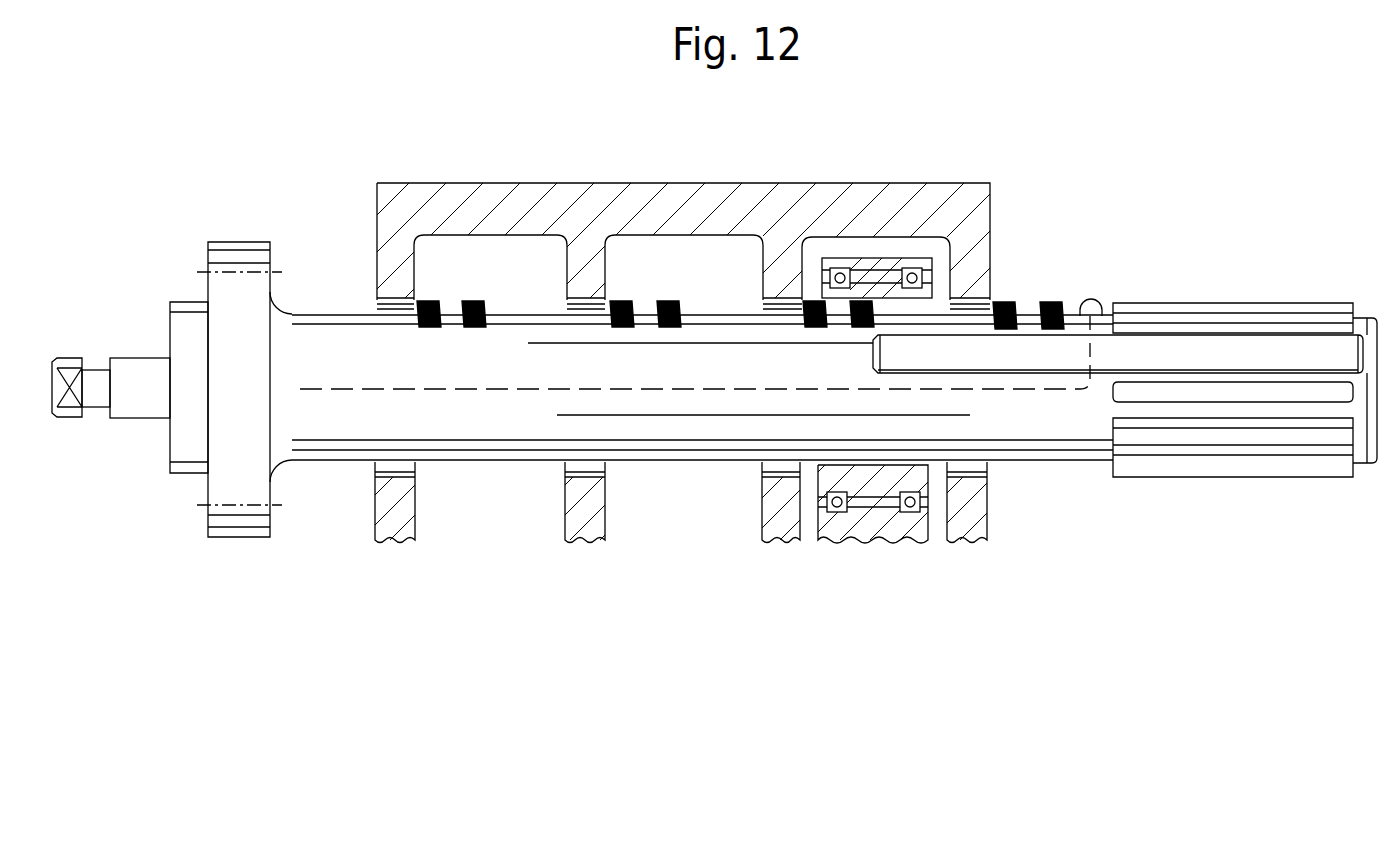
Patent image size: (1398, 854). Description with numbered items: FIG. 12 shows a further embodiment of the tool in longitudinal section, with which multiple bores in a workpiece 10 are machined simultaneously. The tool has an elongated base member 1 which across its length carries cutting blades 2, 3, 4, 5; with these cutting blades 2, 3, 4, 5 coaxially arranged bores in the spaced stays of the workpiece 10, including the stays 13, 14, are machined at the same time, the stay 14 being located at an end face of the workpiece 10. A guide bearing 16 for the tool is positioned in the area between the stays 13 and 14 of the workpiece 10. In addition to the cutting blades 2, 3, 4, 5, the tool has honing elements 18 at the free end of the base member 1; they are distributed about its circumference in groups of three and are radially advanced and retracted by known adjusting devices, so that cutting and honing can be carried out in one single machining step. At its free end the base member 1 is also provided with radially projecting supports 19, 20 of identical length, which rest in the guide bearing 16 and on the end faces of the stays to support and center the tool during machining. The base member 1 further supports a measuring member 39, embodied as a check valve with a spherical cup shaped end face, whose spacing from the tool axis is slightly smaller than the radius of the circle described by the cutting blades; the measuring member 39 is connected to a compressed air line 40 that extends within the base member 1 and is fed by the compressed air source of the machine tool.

The base member 1 is at (338, 422).
The cutting blade 2 is at (478, 300).
The cutting blade 3 is at (672, 300).
The cutting blade 4 is at (858, 300).
The cutting blade 5 is at (1055, 300).
The workpiece 10 is at (551, 205).
The stay 13 is at (772, 525).
The stay 14 is at (967, 507).
The guide bearing 16 is at (898, 264).
The honing element 18 is at (1293, 323).
The support 19 is at (1055, 358).
The support 20 is at (1098, 465).
The measuring member 39 is at (1096, 300).
The compressed air line 40 is at (688, 393).